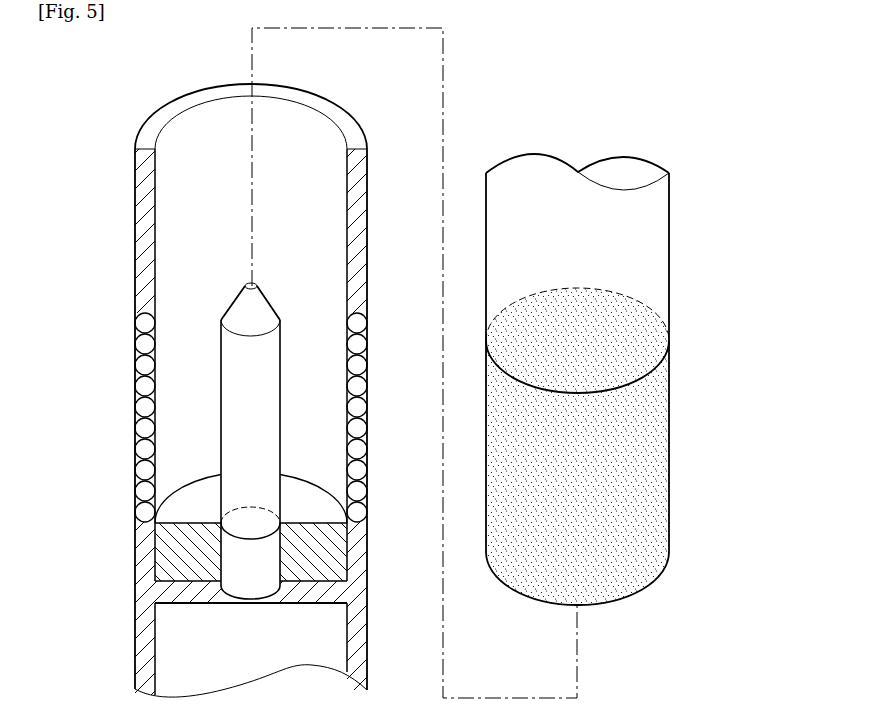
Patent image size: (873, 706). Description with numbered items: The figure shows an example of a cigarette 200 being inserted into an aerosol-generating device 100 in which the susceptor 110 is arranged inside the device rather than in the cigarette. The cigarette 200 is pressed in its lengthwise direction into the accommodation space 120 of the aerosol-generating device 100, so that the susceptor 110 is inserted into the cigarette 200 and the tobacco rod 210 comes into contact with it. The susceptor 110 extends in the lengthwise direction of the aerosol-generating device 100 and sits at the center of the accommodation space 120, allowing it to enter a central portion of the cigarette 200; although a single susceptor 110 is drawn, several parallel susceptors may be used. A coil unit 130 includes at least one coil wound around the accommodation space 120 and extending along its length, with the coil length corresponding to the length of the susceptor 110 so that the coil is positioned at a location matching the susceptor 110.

The aerosol-generating device 100 is at (137, 181).
The susceptor 110 is at (221, 320).
The accommodation space 120 is at (313, 211).
The coil unit 130 is at (142, 365).
The cigarette 200 is at (684, 229).
The tobacco rod 210 is at (660, 453).